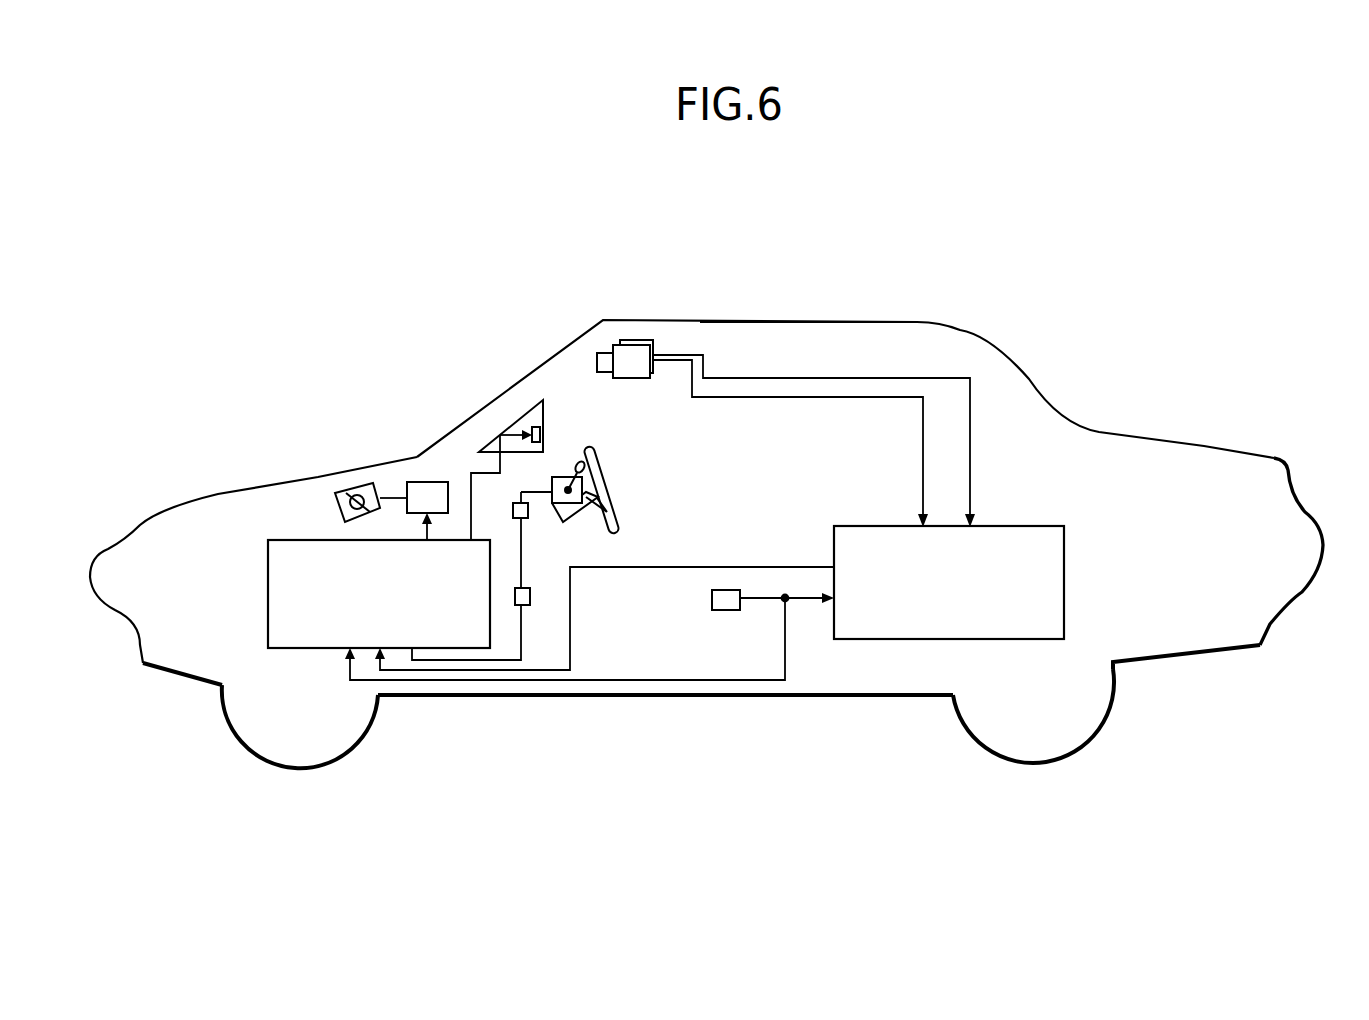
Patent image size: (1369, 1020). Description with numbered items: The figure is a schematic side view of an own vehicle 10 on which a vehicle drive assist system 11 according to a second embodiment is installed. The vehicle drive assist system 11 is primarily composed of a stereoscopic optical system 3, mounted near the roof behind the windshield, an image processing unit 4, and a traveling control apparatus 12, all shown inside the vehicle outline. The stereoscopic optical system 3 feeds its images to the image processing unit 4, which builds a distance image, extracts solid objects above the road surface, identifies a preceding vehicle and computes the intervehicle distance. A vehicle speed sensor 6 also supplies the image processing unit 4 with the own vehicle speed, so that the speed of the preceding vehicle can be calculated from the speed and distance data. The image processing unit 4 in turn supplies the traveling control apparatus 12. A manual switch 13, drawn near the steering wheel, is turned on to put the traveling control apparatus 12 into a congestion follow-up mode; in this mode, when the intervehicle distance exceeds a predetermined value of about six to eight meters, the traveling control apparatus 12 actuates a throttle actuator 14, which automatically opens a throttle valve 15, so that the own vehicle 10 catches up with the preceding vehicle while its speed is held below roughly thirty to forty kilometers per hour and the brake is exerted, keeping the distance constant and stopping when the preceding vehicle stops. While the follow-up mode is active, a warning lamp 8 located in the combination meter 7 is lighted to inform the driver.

The vehicle 10 is at (766, 250).
The vehicle drive assist system 11 is at (870, 340).
The stereoscopic optical system 3 is at (637, 341).
The image processing unit 4 is at (1064, 570).
The vehicle speed sensor 6 is at (712, 598).
The combination meter 7 is at (520, 413).
The warning lamp 8 is at (543, 432).
The traveling control apparatus 12 is at (268, 588).
The manual switch 13 is at (556, 477).
The throttle actuator 14 is at (428, 480).
The throttle valve 15 is at (357, 486).